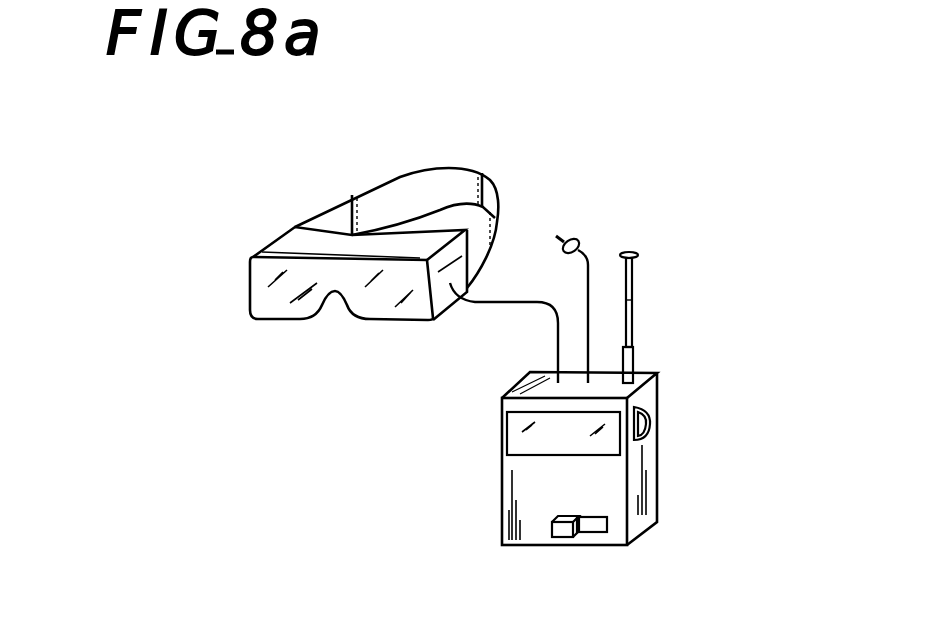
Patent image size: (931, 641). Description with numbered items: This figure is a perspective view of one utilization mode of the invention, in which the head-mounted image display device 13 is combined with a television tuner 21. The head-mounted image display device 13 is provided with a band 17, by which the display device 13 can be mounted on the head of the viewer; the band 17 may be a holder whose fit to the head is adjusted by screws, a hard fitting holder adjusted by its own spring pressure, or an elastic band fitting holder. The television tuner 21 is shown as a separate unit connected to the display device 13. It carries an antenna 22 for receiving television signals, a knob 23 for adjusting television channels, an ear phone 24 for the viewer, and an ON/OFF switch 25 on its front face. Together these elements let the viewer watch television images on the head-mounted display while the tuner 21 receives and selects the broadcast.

The head-mounted image display device 13 is at (280, 300).
The band 17 is at (400, 177).
The television tuner 21 is at (665, 384).
The antenna 22 is at (633, 285).
The knob 23 is at (646, 430).
The ear phone 24 is at (578, 236).
The ON/OFF switch 25 is at (560, 538).